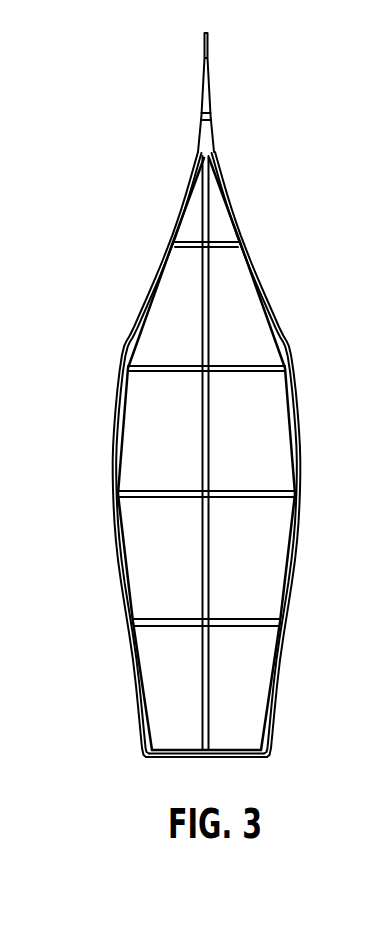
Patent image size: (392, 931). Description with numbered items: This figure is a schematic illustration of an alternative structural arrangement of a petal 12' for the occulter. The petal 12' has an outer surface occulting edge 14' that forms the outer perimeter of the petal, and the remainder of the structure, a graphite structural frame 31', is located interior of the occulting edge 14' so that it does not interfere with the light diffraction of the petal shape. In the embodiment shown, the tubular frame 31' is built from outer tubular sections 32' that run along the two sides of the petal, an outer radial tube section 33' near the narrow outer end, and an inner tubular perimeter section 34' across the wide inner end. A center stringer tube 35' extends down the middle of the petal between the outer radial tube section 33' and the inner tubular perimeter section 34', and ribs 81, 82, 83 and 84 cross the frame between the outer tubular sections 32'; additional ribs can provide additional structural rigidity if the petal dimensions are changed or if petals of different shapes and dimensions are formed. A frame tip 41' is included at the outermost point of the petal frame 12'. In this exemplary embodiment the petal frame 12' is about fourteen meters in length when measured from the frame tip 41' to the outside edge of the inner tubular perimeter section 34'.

The petal 12' is at (250, 484).
The outer surface occulting edge 14' is at (219, 454).
The graphite structural frame 31' is at (233, 454).
The outer tubular sections 32' is at (210, 453).
The outer radial tube section 33' is at (249, 136).
The inner tubular perimeter section 34' is at (214, 776).
The center stringer tube 35' is at (282, 453).
The frame tip 41' is at (248, 92).
The rib 81 is at (190, 242).
The rib 82 is at (166, 372).
The rib 83 is at (160, 498).
The rib 84 is at (168, 628).